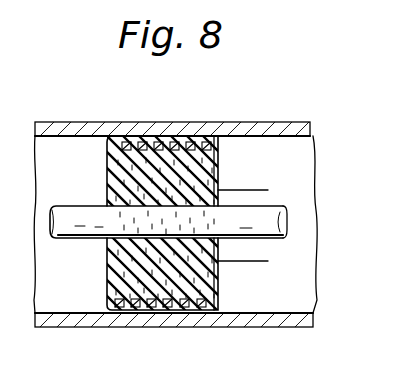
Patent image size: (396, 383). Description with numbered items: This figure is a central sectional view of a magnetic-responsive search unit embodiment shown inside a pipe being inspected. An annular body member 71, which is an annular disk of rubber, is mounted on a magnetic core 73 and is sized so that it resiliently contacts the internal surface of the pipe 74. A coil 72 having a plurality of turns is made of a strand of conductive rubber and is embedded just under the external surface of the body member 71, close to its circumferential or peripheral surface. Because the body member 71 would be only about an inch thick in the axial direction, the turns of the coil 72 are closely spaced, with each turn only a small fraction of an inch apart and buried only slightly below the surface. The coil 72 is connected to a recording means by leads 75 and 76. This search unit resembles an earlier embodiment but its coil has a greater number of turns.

The annular body member 71 is at (213, 316).
The coil 72 is at (177, 135).
The magnetic core 73 is at (285, 234).
The pipe 74 is at (270, 132).
The lead 75 is at (247, 188).
The lead 76 is at (250, 262).